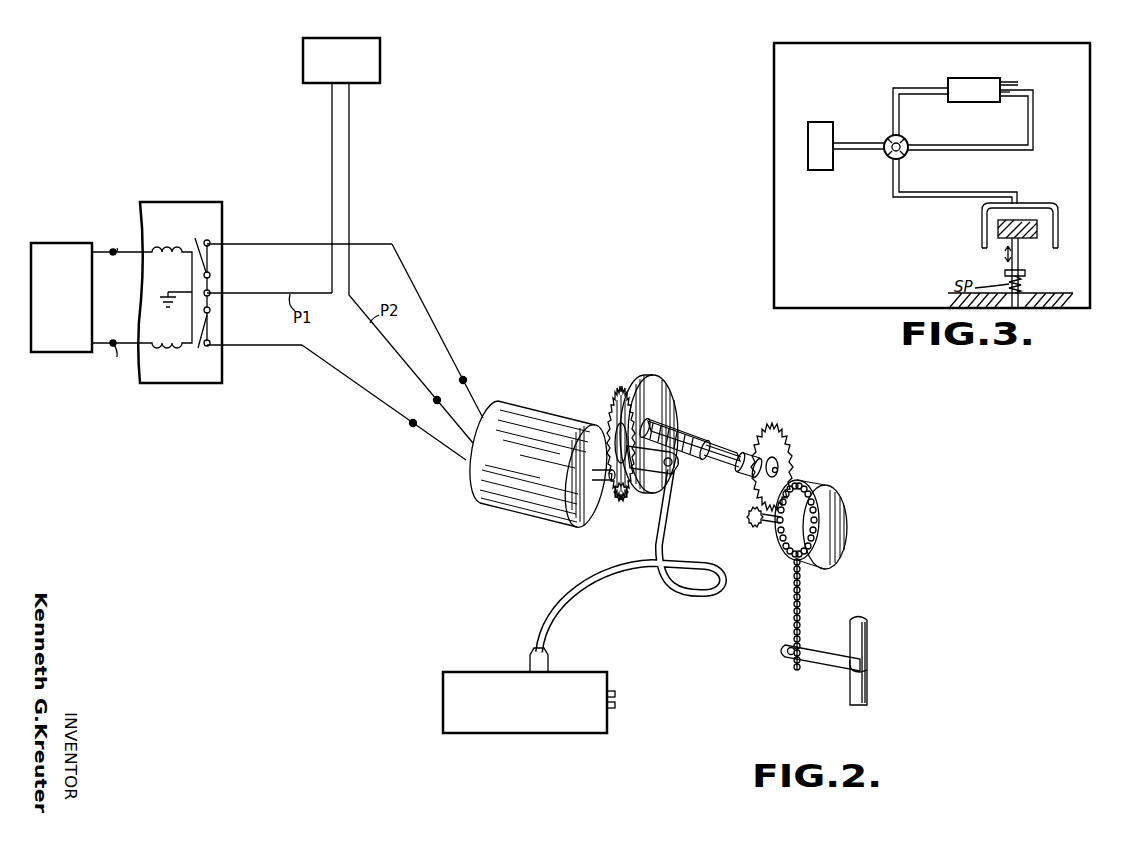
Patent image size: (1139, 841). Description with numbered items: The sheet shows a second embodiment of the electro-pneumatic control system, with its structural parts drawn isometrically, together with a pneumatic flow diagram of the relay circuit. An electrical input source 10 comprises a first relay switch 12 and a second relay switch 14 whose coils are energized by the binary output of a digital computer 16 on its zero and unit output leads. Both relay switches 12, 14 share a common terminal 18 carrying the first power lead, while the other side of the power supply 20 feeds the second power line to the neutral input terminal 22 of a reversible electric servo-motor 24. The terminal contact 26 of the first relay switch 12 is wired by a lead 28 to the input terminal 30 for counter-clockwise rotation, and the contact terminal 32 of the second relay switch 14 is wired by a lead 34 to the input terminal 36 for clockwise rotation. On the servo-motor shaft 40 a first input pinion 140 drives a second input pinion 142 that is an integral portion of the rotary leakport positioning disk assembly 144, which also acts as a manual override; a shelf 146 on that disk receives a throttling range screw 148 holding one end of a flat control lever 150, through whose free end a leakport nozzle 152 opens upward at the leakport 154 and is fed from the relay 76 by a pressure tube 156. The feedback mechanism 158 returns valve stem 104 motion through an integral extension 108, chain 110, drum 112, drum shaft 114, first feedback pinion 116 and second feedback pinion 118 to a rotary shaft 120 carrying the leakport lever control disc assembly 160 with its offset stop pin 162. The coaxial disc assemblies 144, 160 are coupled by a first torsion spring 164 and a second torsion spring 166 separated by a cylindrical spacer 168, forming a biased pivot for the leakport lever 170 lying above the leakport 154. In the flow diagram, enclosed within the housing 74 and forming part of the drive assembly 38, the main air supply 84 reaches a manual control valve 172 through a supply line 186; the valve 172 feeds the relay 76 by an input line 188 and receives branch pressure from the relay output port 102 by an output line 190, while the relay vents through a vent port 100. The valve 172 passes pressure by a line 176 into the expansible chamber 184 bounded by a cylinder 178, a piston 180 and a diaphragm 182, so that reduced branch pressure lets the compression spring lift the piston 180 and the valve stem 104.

In FIG. 2, the electrical input source 10 is at (197, 199).
In FIG. 2, the first relay switch 12 is at (196, 344).
In FIG. 2, the second relay switch 14 is at (190, 239).
In FIG. 2, the digital computer 16 is at (70, 308).
In FIG. 2, the common terminal 18 is at (222, 300).
In FIG. 2, the power supply 20 is at (350, 72).
In FIG. 2, the common or neutral input terminal 22 is at (426, 399).
In FIG. 2, the reversible electric servo-motor 24 is at (499, 451).
In FIG. 2, the terminal contact 26 is at (222, 353).
In FIG. 2, the lead 28 is at (350, 385).
In FIG. 2, the input terminal 30 is at (409, 424).
In FIG. 2, the contact terminal 32 is at (299, 234).
In FIG. 2, the lead 34 is at (419, 289).
In FIG. 2, the input terminal 36 is at (465, 377).
In FIG. 2, the drive assembly 38 is at (720, 425).
In FIG. 2, the servo-motor shaft 40 is at (576, 523).
In FIG. 2, the relay 76 is at (532, 713).
In FIG. 3, the relay 76 is at (981, 98).
In FIG. 2, the vent port 100 is at (616, 693).
In FIG. 3, the vent port 100 is at (1009, 81).
In FIG. 2, the output port 102 is at (616, 707).
In FIG. 3, the output port 102 is at (1010, 100).
In FIG. 2, the valve stem 104 is at (867, 650).
In FIG. 3, the valve stem 104 is at (1021, 246).
In FIG. 2, the integral extension 108 is at (828, 660).
In FIG. 2, the chain 110 is at (801, 602).
In FIG. 2, the drum 112 is at (852, 499).
In FIG. 2, the drum shaft 114 is at (772, 525).
In FIG. 2, the first feedback pinion 116 is at (751, 527).
In FIG. 2, the second feedback pinion 118 is at (791, 452).
In FIG. 2, the rotary shaft 120 is at (782, 470).
In FIG. 2, the first input pinion 140 is at (610, 486).
In FIG. 2, the second input pinion 142 is at (629, 393).
In FIG. 2, the rotary leakport positioning disk assembly 144 is at (653, 367).
In FIG. 2, the integral shelf 146 is at (631, 498).
In FIG. 2, the throttling range screw 148 is at (539, 455).
In FIG. 2, the flat control lever 150 is at (661, 505).
In FIG. 2, the leakport nozzle 152 is at (678, 476).
In FIG. 2, the leakport 154 is at (674, 463).
In FIG. 2, the pressure line or tube 156 is at (594, 592).
In FIG. 2, the feedback mechanism 158 is at (853, 474).
In FIG. 2, the leakport lever control disc assembly 160 is at (759, 456).
In FIG. 2, the stop pin 162 is at (722, 463).
In FIG. 2, the first torsion spring 164 is at (616, 418).
In FIG. 2, the second torsion spring 166 is at (746, 452).
In FIG. 2, the spacer means 168 is at (726, 440).
In FIG. 2, the leakport lever 170 is at (688, 419).
In FIG. 3, the housing 74 is at (1098, 160).
In FIG. 3, the main air supply 84 is at (829, 155).
In FIG. 3, the manual control valve 172 is at (887, 158).
In FIG. 3, the pressure line 176 is at (892, 190).
In FIG. 3, the cylinder 178 is at (982, 213).
In FIG. 3, the piston 180 is at (1004, 242).
In FIG. 3, the diaphragm 182 is at (998, 236).
In FIG. 3, the expansible chamber 184 is at (1022, 208).
In FIG. 3, the supply line 186 is at (871, 129).
In FIG. 3, the input line 188 is at (913, 86).
In FIG. 3, the output line 190 is at (1036, 118).